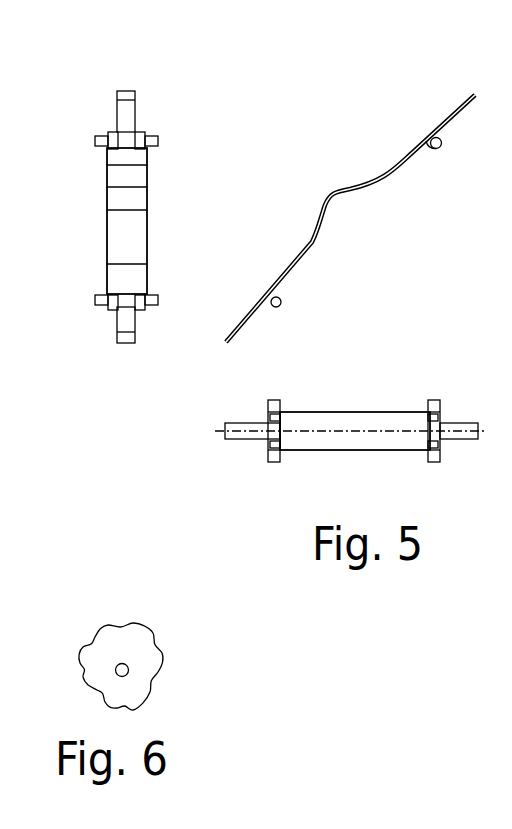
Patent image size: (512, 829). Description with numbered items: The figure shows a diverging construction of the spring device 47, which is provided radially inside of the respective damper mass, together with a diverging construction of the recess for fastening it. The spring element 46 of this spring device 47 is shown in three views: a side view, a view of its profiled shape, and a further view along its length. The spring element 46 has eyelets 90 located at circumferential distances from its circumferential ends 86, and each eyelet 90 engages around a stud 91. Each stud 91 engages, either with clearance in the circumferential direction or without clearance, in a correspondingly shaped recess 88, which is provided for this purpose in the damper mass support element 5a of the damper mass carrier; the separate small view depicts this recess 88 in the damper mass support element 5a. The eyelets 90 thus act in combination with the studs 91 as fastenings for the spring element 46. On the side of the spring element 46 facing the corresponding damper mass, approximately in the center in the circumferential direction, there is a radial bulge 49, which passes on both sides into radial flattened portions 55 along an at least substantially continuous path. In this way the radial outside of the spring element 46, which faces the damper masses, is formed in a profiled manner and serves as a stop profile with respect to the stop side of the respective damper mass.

In FIG. 5, the spring element 46 is at (116, 226).
In FIG. 5, the spring device 47 is at (127, 247).
In FIG. 5, the radial bulge 49 is at (323, 190).
In FIG. 5, the radial flattened portions 55 is at (283, 268).
In FIG. 5, the circumferential ends 86 is at (124, 89).
In FIG. 6, the recesses 88 is at (125, 665).
In FIG. 5, the eyelets 90 is at (113, 140).
In FIG. 5, the stud 91 is at (157, 139).
In FIG. 6, the damper mass support element 5a is at (112, 687).